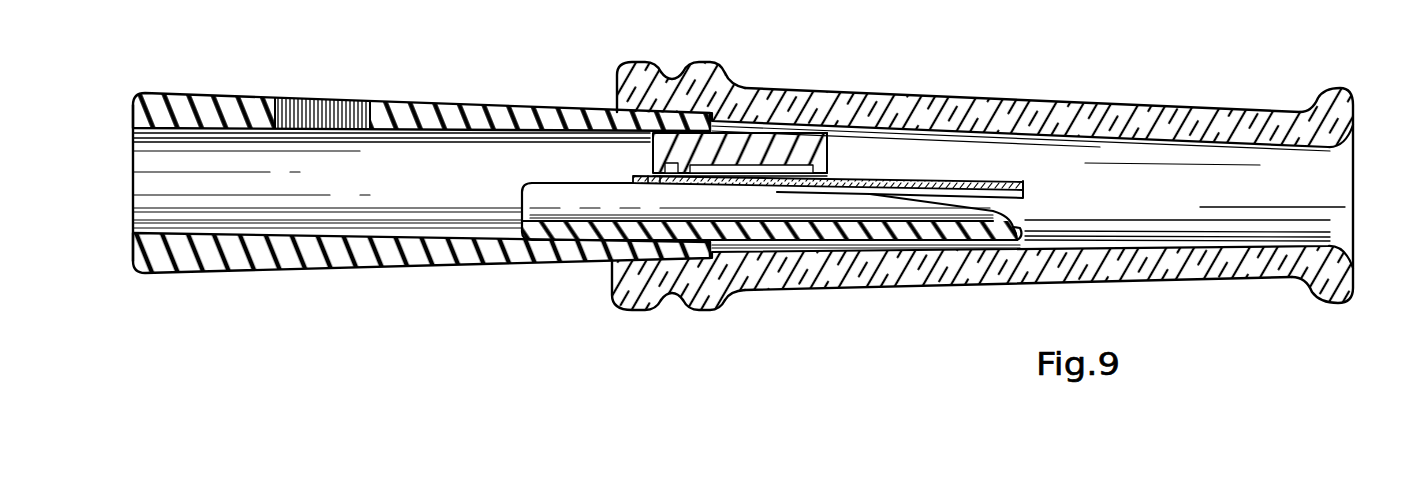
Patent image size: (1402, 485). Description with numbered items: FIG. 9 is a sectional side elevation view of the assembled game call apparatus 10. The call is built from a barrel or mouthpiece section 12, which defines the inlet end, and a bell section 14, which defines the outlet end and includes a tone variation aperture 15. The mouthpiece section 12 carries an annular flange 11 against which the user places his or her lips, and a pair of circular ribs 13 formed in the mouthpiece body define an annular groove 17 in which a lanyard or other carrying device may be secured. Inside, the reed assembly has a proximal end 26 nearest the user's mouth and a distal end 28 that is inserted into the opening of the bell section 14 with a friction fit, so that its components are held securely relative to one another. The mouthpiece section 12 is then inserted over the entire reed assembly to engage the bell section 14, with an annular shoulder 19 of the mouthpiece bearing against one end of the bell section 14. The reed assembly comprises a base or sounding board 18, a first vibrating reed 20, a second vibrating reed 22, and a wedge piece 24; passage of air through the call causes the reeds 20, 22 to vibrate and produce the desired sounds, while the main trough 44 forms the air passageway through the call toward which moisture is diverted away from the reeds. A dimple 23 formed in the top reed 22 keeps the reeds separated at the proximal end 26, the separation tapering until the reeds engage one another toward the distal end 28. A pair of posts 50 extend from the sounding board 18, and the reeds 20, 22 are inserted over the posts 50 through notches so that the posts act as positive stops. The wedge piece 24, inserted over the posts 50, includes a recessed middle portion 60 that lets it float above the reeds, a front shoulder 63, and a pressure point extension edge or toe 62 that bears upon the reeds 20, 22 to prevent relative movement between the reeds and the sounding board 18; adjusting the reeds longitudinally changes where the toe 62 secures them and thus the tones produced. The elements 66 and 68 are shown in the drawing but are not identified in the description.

The game call apparatus 10 is at (878, 192).
The annular flange 11 is at (1322, 88).
The barrel or mouthpiece section 12 is at (1072, 100).
The circular ribs 13 is at (622, 66).
The bell section 14 is at (422, 98).
The tone variation aperture 15 is at (318, 97).
The annular groove 17 is at (668, 76).
The base or sounding board 18 is at (512, 218).
The annular shoulder 19 is at (752, 88).
The first vibrating reed 20 is at (633, 178).
The second vibrating reed 22 is at (640, 176).
The dimple 23 is at (1012, 178).
The wedge piece 24 is at (833, 160).
The proximal end 26 is at (1060, 225).
The distal end 28 is at (502, 175).
The main trough 44 is at (897, 216).
The posts 50 is at (677, 183).
The recessed middle portion 60 is at (768, 185).
The pressure point extension edge or toe 62 is at (822, 177).
The front shoulder 63 is at (803, 178).
The sleeve body 66 is at (650, 185).
The pin 68 is at (695, 184).